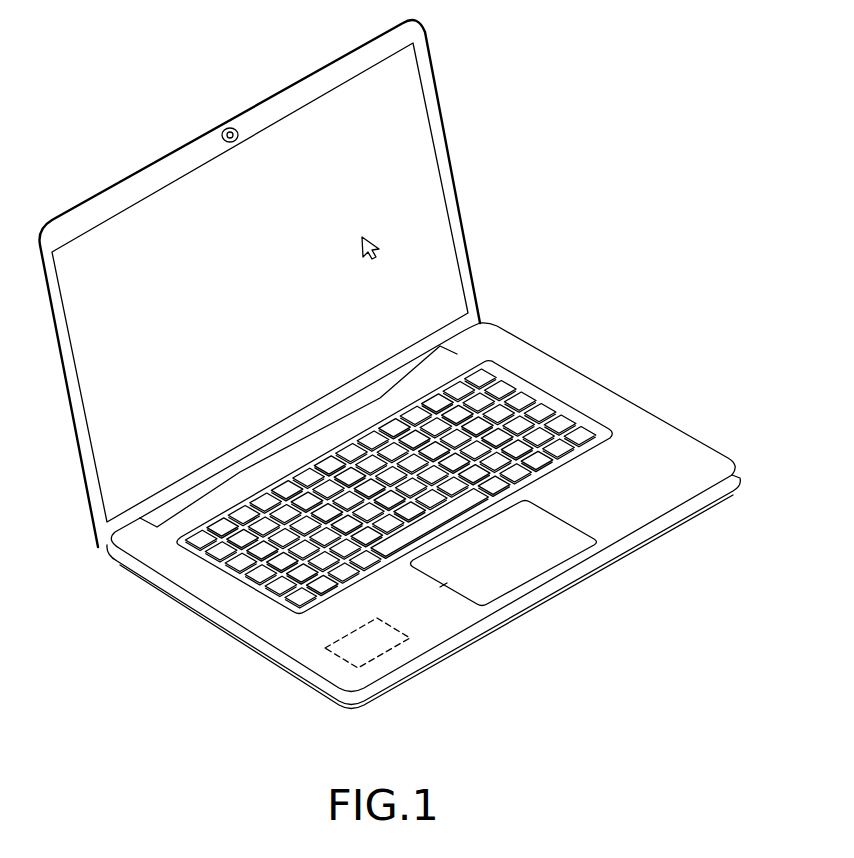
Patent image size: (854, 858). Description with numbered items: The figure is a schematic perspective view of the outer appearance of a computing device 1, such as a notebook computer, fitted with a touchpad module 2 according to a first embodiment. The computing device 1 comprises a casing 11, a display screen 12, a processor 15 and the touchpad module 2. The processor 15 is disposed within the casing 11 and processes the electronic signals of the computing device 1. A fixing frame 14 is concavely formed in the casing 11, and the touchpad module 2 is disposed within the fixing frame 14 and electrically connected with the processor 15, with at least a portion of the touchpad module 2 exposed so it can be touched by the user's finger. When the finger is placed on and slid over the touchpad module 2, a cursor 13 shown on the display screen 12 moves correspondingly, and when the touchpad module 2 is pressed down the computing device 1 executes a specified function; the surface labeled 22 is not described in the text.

The computing device 1 is at (613, 142).
The casing 11 is at (638, 433).
The display screen 12 is at (413, 107).
The cursor 13 is at (370, 235).
The fixing frame 14 is at (445, 585).
The processor 15 is at (357, 652).
The touchpad module 2 is at (504, 569).
The touch surface of touchpad 22 is at (502, 577).